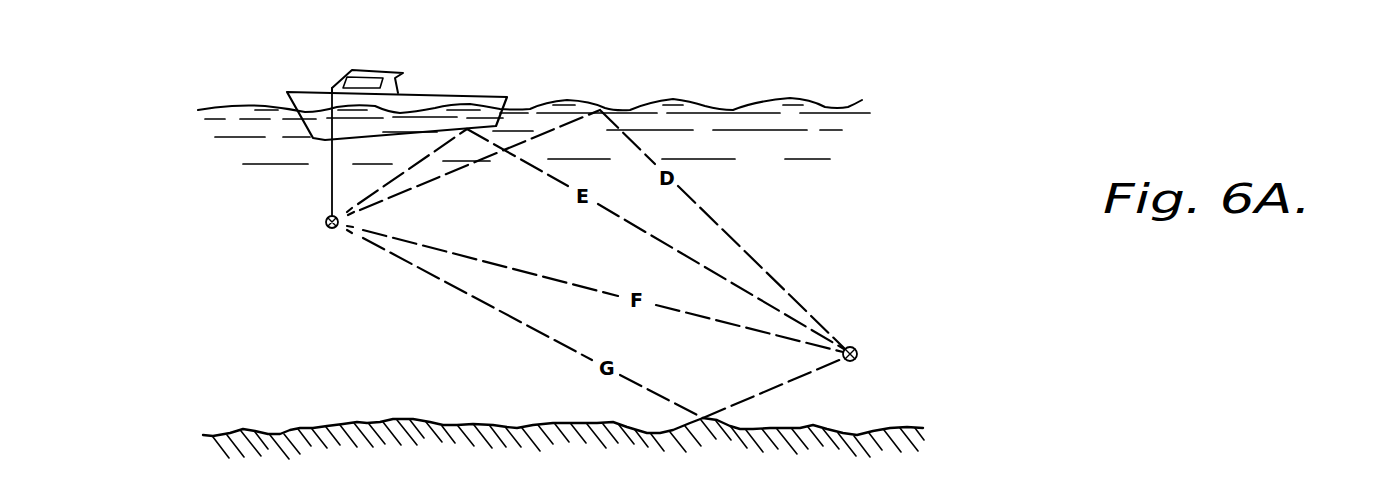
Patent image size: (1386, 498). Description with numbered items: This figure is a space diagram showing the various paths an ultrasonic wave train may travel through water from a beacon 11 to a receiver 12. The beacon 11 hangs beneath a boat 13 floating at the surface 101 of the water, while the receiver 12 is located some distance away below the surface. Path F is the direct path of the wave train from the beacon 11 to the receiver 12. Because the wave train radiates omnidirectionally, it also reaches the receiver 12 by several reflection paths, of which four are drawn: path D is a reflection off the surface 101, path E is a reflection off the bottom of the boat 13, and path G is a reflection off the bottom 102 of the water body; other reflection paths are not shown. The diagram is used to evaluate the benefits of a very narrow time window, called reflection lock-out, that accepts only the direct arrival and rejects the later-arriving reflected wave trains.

The boat 13 is at (290, 98).
The surface 101 is at (823, 104).
The beacon 11 is at (327, 233).
The receiver 12 is at (858, 345).
The bottom 102 is at (447, 424).